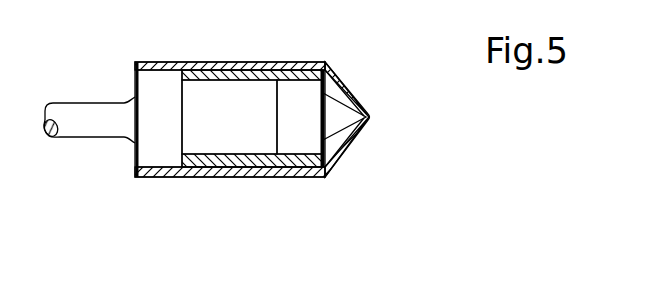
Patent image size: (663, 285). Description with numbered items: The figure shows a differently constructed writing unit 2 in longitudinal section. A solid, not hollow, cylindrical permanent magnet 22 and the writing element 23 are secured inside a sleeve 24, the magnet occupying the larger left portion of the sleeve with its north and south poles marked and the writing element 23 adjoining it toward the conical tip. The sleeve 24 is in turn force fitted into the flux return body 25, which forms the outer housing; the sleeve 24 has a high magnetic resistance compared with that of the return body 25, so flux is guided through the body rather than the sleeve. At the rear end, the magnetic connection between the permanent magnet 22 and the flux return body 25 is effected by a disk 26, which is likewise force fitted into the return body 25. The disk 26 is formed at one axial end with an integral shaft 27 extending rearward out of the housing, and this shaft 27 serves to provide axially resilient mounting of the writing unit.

The writing unit 2 is at (167, 246).
The permanent magnet 22 is at (228, 140).
The writing element 23 is at (290, 145).
The sleeve 24 is at (246, 76).
The flux return body 25 is at (167, 172).
The disk 26 is at (145, 155).
The shaft 27 is at (65, 132).